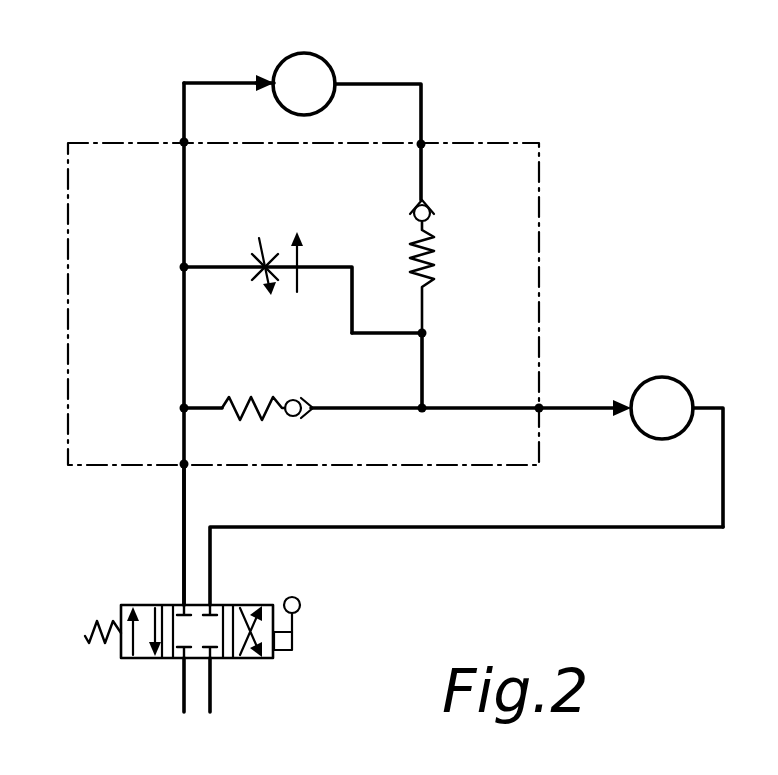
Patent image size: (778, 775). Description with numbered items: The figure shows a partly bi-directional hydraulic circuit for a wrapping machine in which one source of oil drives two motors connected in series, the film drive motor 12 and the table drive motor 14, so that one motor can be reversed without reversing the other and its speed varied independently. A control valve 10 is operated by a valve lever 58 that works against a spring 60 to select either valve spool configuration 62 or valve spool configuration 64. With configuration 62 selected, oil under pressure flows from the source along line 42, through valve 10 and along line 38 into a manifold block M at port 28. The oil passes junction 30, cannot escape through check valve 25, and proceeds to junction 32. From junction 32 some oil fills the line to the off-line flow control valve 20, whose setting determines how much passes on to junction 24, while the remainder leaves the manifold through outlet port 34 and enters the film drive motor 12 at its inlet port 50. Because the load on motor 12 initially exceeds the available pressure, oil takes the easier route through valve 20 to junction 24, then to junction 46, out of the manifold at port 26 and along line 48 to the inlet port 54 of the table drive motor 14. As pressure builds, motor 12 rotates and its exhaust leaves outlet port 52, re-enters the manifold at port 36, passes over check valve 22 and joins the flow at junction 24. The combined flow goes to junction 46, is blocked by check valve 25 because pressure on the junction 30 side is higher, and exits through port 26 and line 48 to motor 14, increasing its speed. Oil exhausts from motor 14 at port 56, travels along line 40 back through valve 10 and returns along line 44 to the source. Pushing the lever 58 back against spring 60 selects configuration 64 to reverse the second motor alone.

The valve 10 is at (250, 660).
The film drive motor 12 is at (280, 64).
The table drive motor 14 is at (670, 378).
The off-line flow control valve 20 is at (258, 286).
The check valve 22 is at (436, 278).
The junction 24 is at (420, 337).
The check valve 25 is at (290, 418).
The port 26 is at (537, 406).
The port 28 is at (182, 468).
The junction 30 is at (182, 409).
The junction 32 is at (182, 268).
The outlet port 34 is at (182, 140).
The port 36 is at (423, 142).
The line 38 is at (187, 507).
The line 40 is at (370, 525).
The line 42 is at (180, 690).
The line 44 is at (212, 690).
The junction 46 is at (424, 412).
The line 48 is at (582, 411).
The inlet port 50 is at (270, 90).
The outlet port 52 is at (336, 90).
The inlet port 54 is at (628, 405).
The port 56 is at (699, 405).
The valve lever 58 is at (300, 608).
The spring 60 is at (85, 638).
The valve spool configuration 62 is at (150, 604).
The valve spool configuration 64 is at (244, 605).
The manifold block M is at (540, 200).